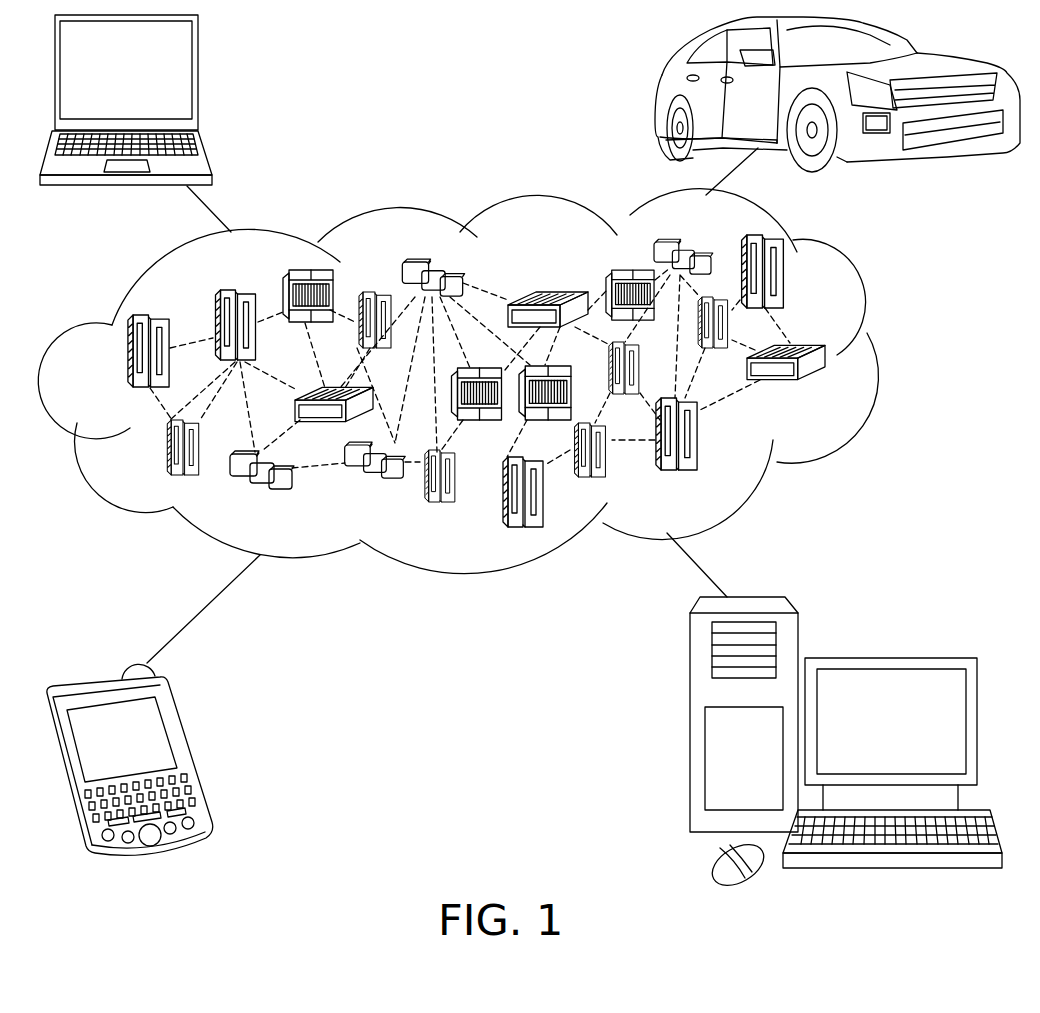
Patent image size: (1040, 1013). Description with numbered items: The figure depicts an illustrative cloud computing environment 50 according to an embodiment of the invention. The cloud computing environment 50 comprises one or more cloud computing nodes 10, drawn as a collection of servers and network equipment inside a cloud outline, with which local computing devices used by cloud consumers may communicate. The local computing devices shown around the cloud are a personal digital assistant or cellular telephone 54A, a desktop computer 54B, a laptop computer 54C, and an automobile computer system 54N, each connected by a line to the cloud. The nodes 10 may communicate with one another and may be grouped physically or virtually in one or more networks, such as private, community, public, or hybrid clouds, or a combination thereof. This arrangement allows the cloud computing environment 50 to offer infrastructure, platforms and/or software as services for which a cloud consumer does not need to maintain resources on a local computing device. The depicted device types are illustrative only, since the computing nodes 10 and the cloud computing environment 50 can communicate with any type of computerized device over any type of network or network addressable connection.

The cloud computing nodes 10 is at (827, 393).
The cloud computing environment 50 is at (893, 367).
The personal digital assistant (PDA) or cellular telephone 54A is at (190, 755).
The desktop computer 54B is at (888, 658).
The laptop computer 54C is at (198, 80).
The automobile computer system 54N is at (662, 95).